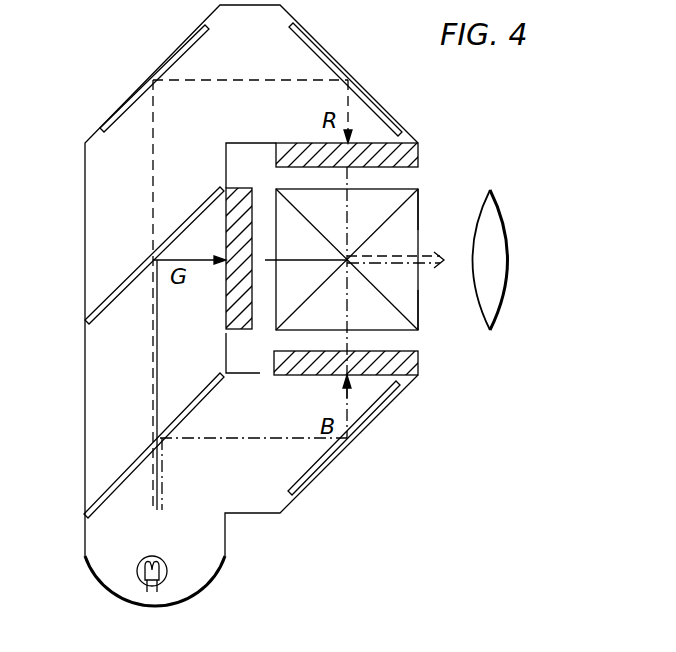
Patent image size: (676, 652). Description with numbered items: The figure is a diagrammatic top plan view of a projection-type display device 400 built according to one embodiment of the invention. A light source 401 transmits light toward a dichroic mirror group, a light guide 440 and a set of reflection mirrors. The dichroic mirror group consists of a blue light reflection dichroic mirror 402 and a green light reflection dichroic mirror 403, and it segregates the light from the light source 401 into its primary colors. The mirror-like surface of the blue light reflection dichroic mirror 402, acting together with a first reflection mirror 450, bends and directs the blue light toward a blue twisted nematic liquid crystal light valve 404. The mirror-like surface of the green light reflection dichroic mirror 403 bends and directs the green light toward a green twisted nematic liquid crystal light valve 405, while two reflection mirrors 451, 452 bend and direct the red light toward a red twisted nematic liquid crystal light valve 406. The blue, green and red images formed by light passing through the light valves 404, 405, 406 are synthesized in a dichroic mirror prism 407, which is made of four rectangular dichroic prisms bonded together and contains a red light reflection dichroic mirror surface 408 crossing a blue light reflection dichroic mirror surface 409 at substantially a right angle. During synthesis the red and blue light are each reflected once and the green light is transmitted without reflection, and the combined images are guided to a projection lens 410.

The projection-type display device 400 is at (148, 67).
The light source 401 is at (222, 584).
The blue light reflection dichroic mirror 402 is at (90, 500).
The green light reflection dichroic mirror 403 is at (88, 326).
The blue twisted nematic liquid crystal light valve 404 is at (418, 367).
The green twisted nematic liquid crystal light valve 405 is at (224, 203).
The red twisted nematic liquid crystal light valve 406 is at (412, 158).
The dichroic mirror prism 407 is at (390, 188).
The red light reflection dichroic mirror surface 408 is at (418, 318).
The blue light reflection dichroic mirror surface 409 is at (413, 208).
The projection lens 410 is at (512, 245).
The light guide 440 is at (85, 153).
The first reflection mirror 450 is at (300, 493).
The reflection mirror 451 is at (184, 47).
The reflection mirror 452 is at (350, 60).